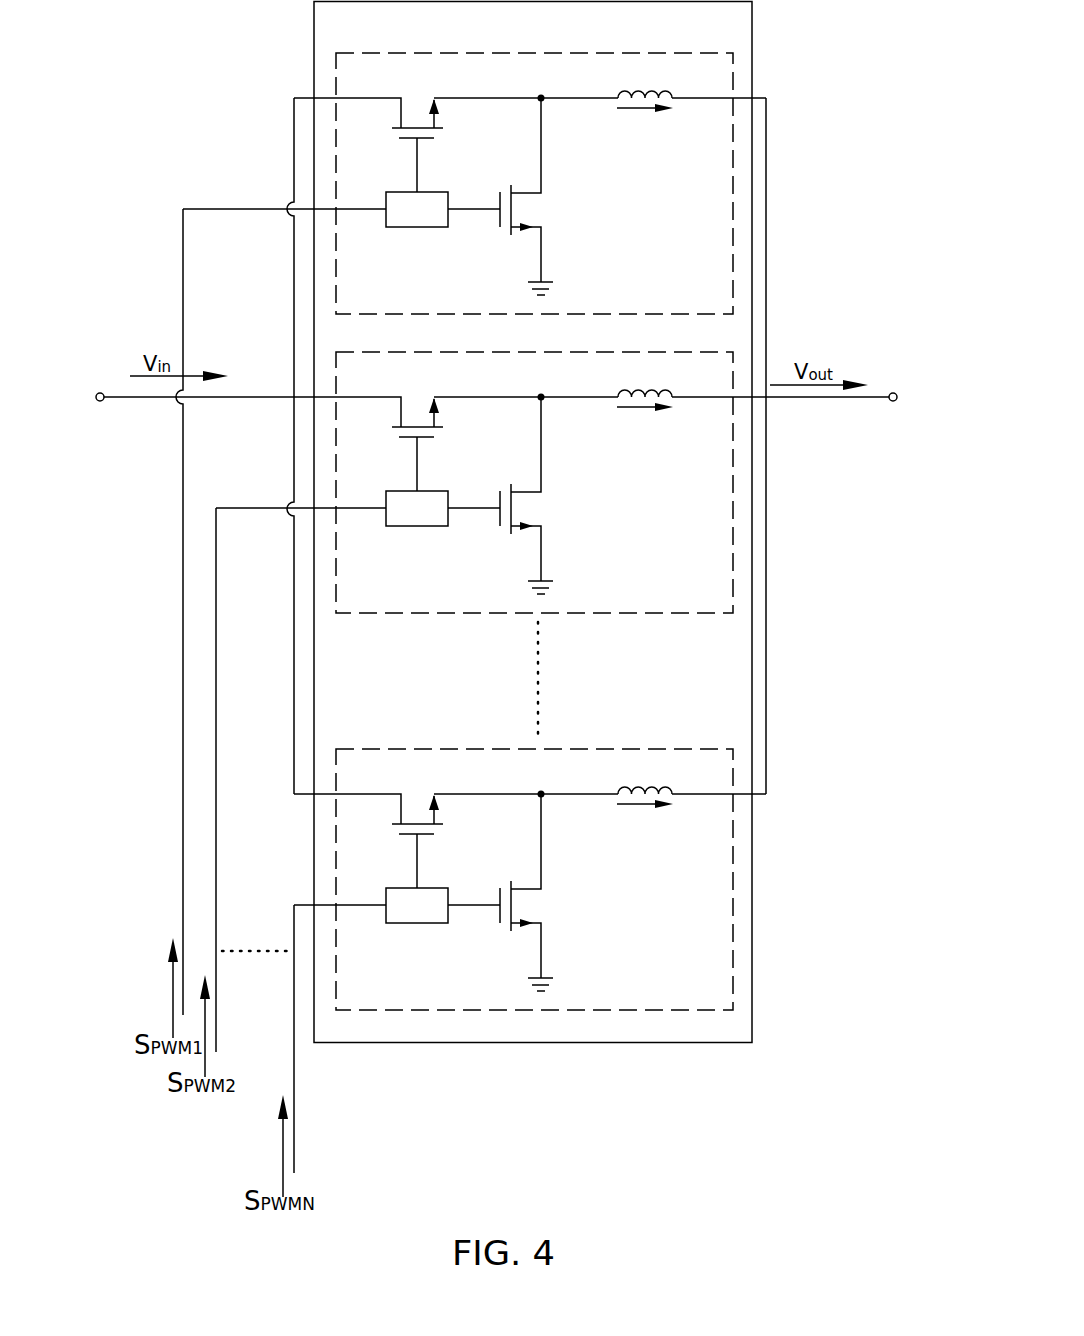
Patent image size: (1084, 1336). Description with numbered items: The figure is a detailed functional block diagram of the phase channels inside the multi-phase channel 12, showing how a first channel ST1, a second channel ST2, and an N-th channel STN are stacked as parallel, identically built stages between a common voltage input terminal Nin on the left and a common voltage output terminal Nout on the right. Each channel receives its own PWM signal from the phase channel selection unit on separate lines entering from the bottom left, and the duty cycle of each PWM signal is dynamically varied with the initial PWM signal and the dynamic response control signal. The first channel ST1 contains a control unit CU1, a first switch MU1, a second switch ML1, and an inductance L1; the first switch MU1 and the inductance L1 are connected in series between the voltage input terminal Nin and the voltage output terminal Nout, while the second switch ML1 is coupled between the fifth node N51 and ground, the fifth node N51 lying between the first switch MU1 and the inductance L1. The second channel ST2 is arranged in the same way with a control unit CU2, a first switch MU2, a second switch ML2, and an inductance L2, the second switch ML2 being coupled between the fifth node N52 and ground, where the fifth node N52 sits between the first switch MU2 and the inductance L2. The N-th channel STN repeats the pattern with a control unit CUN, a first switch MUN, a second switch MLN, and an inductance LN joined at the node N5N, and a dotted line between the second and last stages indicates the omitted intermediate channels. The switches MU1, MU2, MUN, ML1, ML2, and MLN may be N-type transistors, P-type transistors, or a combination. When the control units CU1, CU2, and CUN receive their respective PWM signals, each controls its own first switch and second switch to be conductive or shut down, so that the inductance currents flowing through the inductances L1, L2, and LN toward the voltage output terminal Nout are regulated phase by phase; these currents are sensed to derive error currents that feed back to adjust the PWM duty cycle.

The multi-phase channel 12 is at (356, 30).
The first channel ST1 is at (381, 81).
The second channel ST2 is at (381, 380).
The N-th channel STN is at (383, 777).
The first switch MU1 is at (368, 145).
The first switch MU2 is at (368, 444).
The first switch MUN is at (368, 841).
The second switch ML1 is at (544, 202).
The second switch ML2 is at (544, 501).
The second switch MLN is at (545, 898).
The control unit CU1 is at (439, 222).
The control unit CU2 is at (439, 521).
The control unit CUN is at (439, 918).
The inductance L1 is at (692, 82).
The inductance L2 is at (753, 381).
The inductance LN is at (692, 778).
The fifth node N51 is at (526, 85).
The fifth node N52 is at (526, 384).
The fifth node N5N is at (526, 781).
The voltage input terminal Nin is at (189, 384).
The voltage output terminal Nout is at (890, 384).